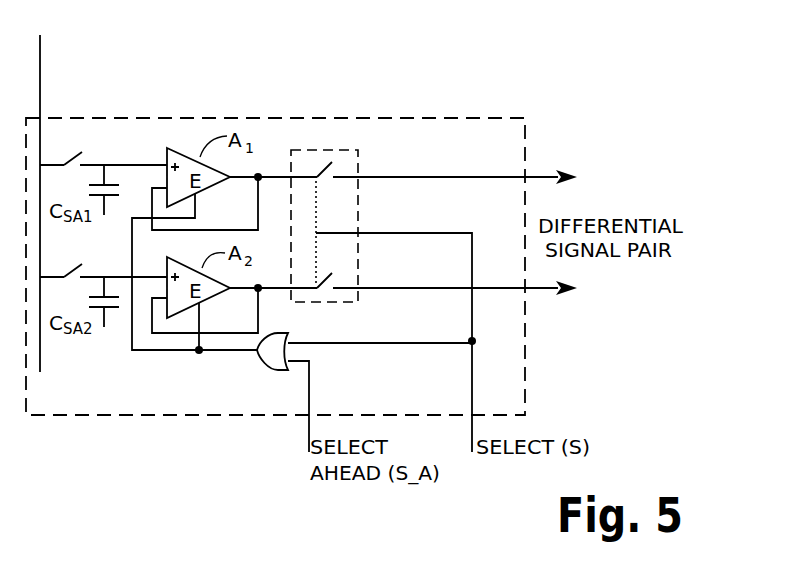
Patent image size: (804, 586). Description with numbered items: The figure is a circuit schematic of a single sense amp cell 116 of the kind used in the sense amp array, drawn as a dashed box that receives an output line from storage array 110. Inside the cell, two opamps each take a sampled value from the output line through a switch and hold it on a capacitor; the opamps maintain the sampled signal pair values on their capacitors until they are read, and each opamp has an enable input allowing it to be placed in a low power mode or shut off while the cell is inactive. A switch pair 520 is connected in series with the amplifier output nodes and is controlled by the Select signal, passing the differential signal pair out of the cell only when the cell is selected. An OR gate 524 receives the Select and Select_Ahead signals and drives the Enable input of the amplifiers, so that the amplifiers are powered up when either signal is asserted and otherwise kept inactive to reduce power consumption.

The storage array (output line from) 110 is at (40, 82).
The sense amp cell 116 is at (472, 118).
The switch pair 520 is at (412, 156).
The OR gate 524 is at (260, 362).